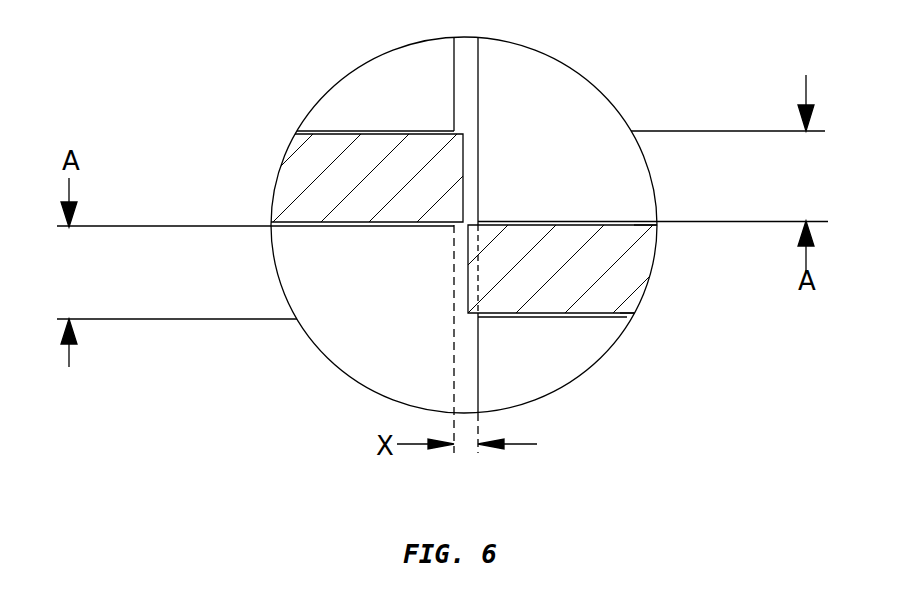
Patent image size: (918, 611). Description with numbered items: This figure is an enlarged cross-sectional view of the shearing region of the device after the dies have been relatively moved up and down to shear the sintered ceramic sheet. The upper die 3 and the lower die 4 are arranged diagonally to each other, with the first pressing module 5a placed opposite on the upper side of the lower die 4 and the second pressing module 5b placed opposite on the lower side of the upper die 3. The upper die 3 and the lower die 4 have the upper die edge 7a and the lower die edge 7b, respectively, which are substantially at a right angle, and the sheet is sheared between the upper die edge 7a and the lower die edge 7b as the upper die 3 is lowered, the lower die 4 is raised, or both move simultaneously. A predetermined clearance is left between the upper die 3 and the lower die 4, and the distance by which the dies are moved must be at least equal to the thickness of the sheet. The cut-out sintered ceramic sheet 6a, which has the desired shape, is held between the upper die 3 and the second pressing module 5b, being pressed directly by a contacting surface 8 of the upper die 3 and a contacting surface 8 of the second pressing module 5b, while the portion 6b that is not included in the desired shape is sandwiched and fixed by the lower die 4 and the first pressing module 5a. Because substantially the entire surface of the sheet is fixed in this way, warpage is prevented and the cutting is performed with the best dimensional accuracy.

The upper die 3 is at (590, 98).
The lower die 4 is at (372, 373).
The first pressing module 5a is at (370, 85).
The second pressing module 5b is at (563, 363).
The cut-out sintered ceramic sheet 6a is at (633, 270).
The portion not included in the desired shape 6b is at (303, 163).
The upper die edge 7a is at (487, 213).
The lower die edge 7b is at (445, 233).
The contacting surface 8 is at (645, 226).